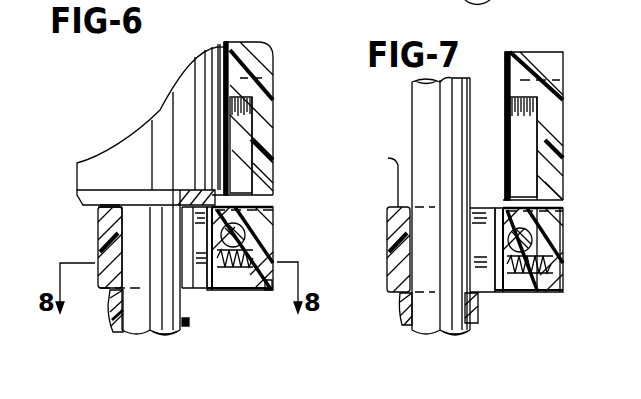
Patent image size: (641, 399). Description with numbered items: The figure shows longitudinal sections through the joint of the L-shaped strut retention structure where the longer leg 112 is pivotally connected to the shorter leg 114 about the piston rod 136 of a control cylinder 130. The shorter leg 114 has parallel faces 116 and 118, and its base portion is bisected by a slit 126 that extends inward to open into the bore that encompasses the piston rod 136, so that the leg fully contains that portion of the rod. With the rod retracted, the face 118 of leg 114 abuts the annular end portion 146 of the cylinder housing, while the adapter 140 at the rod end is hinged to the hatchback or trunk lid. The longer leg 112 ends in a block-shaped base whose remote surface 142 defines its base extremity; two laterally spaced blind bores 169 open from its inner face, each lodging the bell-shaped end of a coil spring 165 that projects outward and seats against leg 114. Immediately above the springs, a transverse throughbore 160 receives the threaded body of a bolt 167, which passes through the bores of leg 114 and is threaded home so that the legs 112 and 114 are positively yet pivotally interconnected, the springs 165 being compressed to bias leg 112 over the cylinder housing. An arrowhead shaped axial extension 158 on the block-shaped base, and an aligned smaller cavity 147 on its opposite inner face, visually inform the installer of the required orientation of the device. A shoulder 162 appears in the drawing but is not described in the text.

In FIG. 6, the longer leg 112 is at (258, 52).
In FIG. 7, the longer leg 112 is at (563, 62).
In FIG. 6, the shorter leg 114 is at (97, 242).
In FIG. 7, the shorter leg 114 is at (485, 200).
In FIG. 6, the face 116 is at (203, 290).
In FIG. 7, the face 116 is at (540, 294).
In FIG. 6, the face 118 is at (100, 197).
In FIG. 7, the face 118 is at (377, 166).
In FIG. 6, the slit 126 is at (210, 290).
In FIG. 7, the slit 126 is at (500, 294).
In FIG. 6, the control cylinder 130 is at (201, 58).
In FIG. 6, the piston rod 136 is at (133, 318).
In FIG. 7, the piston rod 136 is at (420, 107).
In FIG. 6, the adapter 140 is at (186, 322).
In FIG. 7, the adapter 140 is at (407, 327).
In FIG. 6, the remote surface 142 is at (250, 290).
In FIG. 7, the remote surface 142 is at (560, 293).
In FIG. 6, the annular end portion 146 is at (97, 229).
In FIG. 6, the cavity 147 is at (232, 108).
In FIG. 7, the cavity 147 is at (530, 123).
In FIG. 6, the arrowhead shaped axial extension 158 is at (275, 93).
In FIG. 7, the arrowhead shaped axial extension 158 is at (563, 98).
In FIG. 6, the throughbore 160 is at (270, 203).
In FIG. 7, the throughbore 160 is at (560, 202).
In FIG. 6, the flange 162 is at (177, 195).
In FIG. 6, the coil spring 165 is at (268, 238).
In FIG. 7, the coil spring 165 is at (560, 253).
In FIG. 6, the bolt 167 is at (265, 190).
In FIG. 7, the bolt 167 is at (558, 188).
In FIG. 6, the blind bore 169 is at (268, 299).
In FIG. 7, the blind bore 169 is at (562, 281).